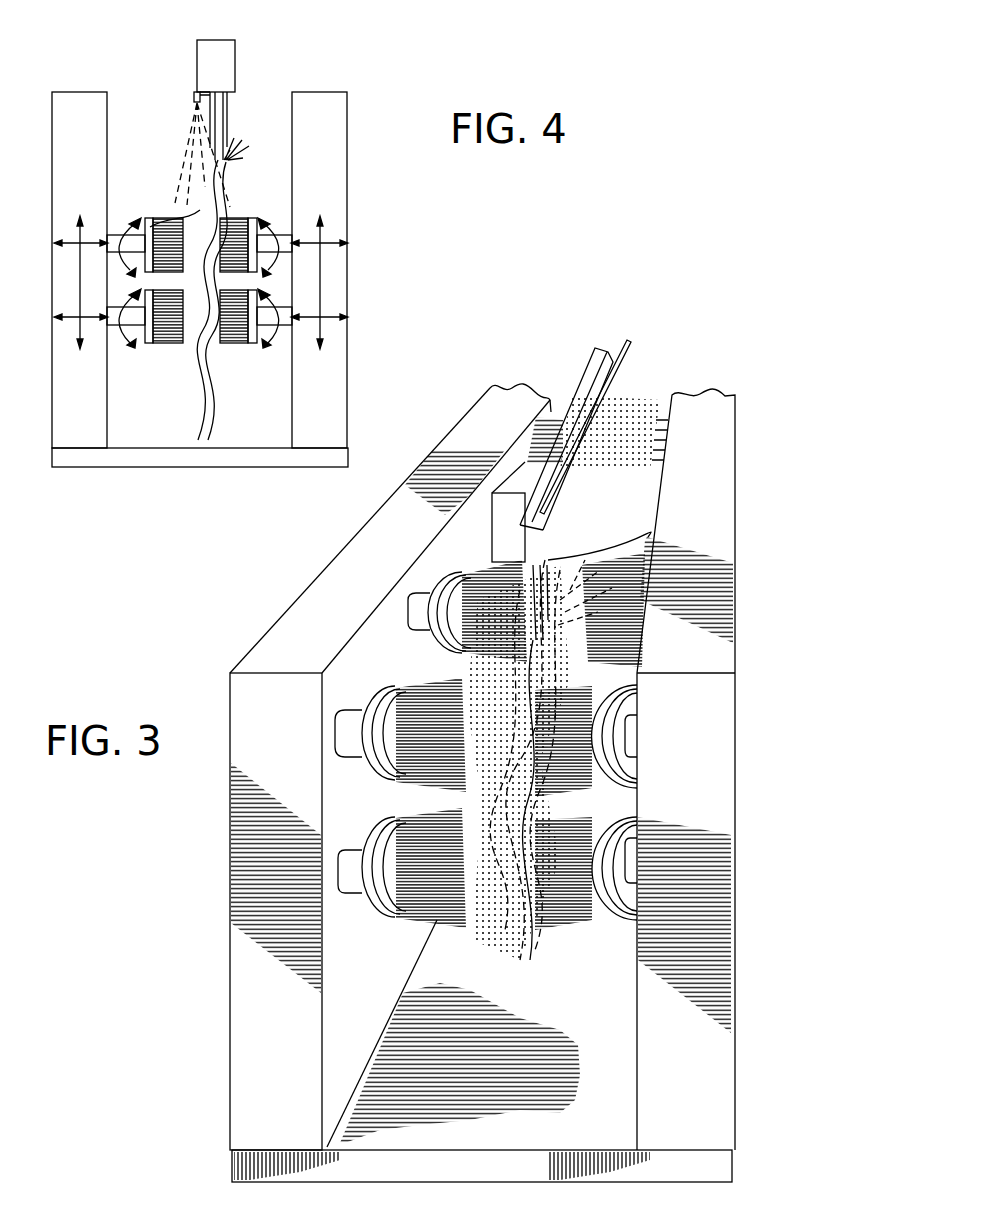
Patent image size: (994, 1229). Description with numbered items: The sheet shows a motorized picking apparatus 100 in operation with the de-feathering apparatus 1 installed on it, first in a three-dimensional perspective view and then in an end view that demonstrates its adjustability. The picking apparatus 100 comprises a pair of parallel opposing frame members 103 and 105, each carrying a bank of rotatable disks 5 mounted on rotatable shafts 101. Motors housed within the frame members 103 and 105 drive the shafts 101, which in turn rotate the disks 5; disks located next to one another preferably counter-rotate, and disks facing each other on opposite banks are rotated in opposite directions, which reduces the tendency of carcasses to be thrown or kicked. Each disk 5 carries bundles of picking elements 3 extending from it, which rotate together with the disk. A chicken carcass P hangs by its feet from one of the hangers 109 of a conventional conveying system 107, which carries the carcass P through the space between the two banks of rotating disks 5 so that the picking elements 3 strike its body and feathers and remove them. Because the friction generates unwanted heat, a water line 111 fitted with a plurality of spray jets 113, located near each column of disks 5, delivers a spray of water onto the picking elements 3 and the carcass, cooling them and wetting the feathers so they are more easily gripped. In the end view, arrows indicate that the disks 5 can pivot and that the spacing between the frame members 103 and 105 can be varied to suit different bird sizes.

In FIG. 4, the de-feathering apparatus 1 is at (267, 330).
In FIG. 3, the de-feathering apparatus 1 is at (524, 778).
In FIG. 4, the picking elements 3 is at (214, 346).
In FIG. 3, the picking elements 3 is at (545, 893).
In FIG. 4, the rotatable disks 5 is at (254, 345).
In FIG. 3, the rotatable disks 5 is at (620, 925).
In FIG. 4, the picking apparatus 100 is at (364, 223).
In FIG. 3, the picking apparatus 100 is at (207, 866).
In FIG. 4, the rotatable shafts 101 is at (288, 333).
In FIG. 3, the rotatable shafts 101 is at (628, 840).
In FIG. 4, the frame member 103 is at (336, 163).
In FIG. 3, the frame member 103 is at (697, 728).
In FIG. 4, the frame member 105 is at (95, 163).
In FIG. 3, the frame member 105 is at (285, 729).
In FIG. 4, the conveying system 107 is at (222, 60).
In FIG. 3, the conveying system 107 is at (503, 540).
In FIG. 4, the hangers 109 is at (226, 117).
In FIG. 3, the hangers 109 is at (650, 537).
In FIG. 4, the water line 111 is at (194, 92).
In FIG. 3, the water line 111 is at (633, 352).
In FIG. 4, the spray jets 113 is at (193, 100).
In FIG. 3, the spray jets 113 is at (628, 390).
In FIG. 4, the chicken carcass P is at (212, 273).
In FIG. 3, the chicken carcass P is at (532, 798).